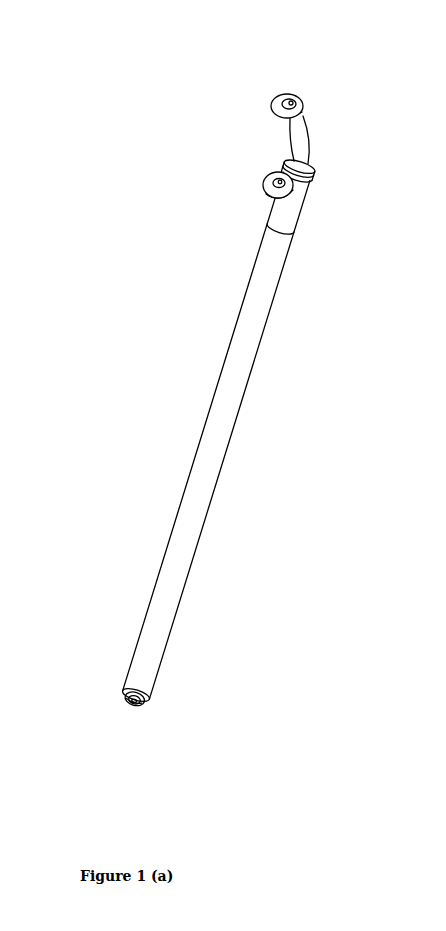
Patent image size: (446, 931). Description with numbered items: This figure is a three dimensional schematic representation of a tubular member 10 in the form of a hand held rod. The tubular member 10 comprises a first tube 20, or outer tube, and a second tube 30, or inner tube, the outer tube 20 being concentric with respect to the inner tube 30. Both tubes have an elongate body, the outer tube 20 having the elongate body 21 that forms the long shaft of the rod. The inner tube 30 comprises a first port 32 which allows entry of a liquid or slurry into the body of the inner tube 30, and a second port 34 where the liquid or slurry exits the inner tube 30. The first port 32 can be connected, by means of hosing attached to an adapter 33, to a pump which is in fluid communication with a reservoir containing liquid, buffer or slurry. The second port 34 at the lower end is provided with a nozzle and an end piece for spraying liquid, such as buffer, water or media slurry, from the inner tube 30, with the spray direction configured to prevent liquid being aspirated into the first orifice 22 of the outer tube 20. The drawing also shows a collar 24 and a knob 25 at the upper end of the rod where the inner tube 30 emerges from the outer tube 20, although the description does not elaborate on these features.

The tubular member 10 is at (290, 288).
The first tube 20 is at (244, 402).
The elongate body 21 is at (212, 452).
The first orifice 22 is at (123, 698).
The collar 24 is at (275, 183).
The knob 25 is at (268, 197).
The second tube 30 is at (320, 137).
The first port 32 is at (288, 104).
The adapter 33 is at (273, 111).
The second port 34 is at (133, 708).